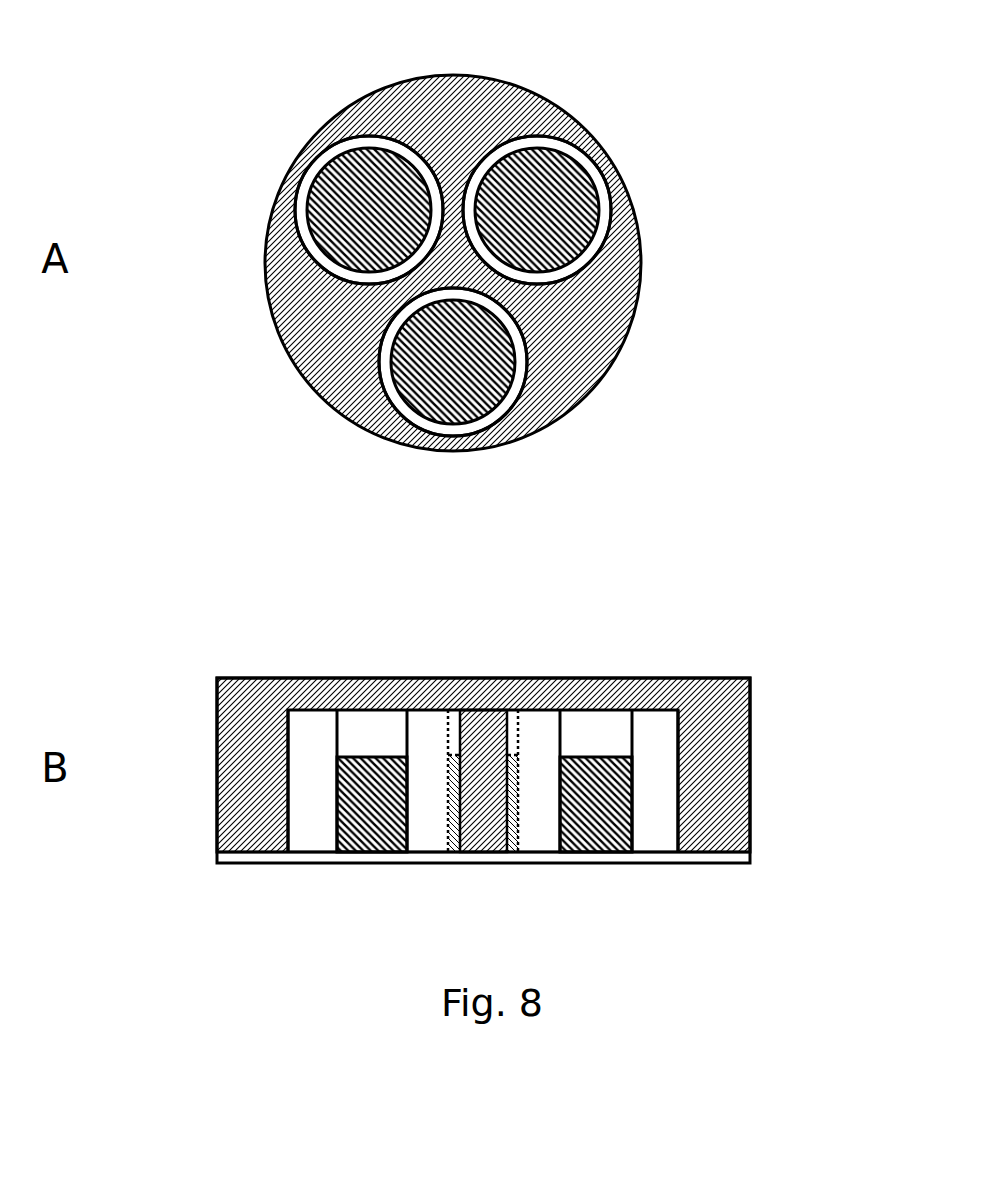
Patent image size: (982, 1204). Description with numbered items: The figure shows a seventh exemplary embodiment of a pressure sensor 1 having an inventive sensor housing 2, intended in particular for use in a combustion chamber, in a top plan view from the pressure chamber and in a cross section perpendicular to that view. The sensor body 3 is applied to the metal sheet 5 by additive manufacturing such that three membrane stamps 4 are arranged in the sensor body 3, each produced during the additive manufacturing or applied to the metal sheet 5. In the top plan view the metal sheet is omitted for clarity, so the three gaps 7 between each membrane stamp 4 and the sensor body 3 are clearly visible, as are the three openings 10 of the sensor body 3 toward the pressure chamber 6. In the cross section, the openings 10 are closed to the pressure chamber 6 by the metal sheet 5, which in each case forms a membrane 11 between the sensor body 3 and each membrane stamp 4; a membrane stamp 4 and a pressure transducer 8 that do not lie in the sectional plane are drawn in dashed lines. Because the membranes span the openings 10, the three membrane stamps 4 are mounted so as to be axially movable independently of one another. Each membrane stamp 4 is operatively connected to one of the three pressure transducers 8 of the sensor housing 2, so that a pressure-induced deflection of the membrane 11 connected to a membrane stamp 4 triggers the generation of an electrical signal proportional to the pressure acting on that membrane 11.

The pressure sensor 1 is at (231, 91).
The sensor housing 2 is at (236, 270).
The sensor body 3 is at (612, 365).
The membrane stamp 4 is at (318, 190).
The metal sheet 5 is at (711, 869).
The pressure chamber 6 is at (485, 937).
The gap 7 is at (322, 163).
The pressure transducer 8 is at (378, 758).
The opening 10 is at (308, 851).
The membrane 11 is at (312, 855).